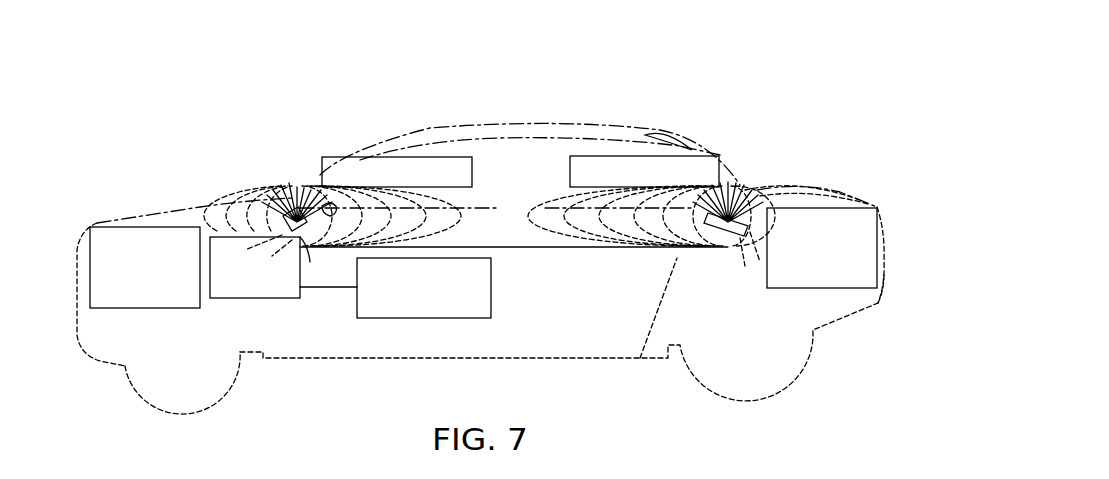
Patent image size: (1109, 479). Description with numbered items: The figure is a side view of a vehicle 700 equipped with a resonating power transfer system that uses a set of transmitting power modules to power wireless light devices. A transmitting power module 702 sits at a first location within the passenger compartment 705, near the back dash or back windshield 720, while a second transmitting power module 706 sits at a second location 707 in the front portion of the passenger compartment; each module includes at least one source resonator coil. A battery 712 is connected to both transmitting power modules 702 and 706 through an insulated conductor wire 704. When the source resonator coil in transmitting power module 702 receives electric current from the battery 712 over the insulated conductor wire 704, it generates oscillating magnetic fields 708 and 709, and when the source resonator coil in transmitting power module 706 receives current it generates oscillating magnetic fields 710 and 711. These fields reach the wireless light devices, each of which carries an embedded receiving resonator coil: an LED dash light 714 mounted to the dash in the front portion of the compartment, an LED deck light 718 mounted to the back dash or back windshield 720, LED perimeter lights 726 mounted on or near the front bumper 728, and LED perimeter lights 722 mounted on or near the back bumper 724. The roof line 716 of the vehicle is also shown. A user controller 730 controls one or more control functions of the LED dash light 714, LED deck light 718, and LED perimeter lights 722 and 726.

The vehicle 700 is at (268, 103).
The transmitting power module 702 is at (735, 205).
The insulated conductor wire 704 is at (728, 235).
The passenger compartment 705 is at (538, 211).
The transmitting power module 706 is at (290, 206).
The second location 707 is at (308, 258).
The oscillating magnetic field 708 is at (790, 185).
The oscillating magnetic field 709 is at (597, 248).
The oscillating magnetic field 710 is at (300, 198).
The oscillating magnetic field 711 is at (205, 206).
The battery 712 is at (272, 298).
The LED dash light 714 is at (473, 174).
The roof 716 is at (428, 160).
The LED deck light 718 is at (702, 156).
The back windshield 720 is at (660, 140).
The LED perimeter lights 722 is at (790, 288).
The back bumper 724 is at (880, 258).
The LED perimeter lights 726 is at (148, 308).
The front bumper 728 is at (78, 233).
The user controller 730 is at (492, 300).